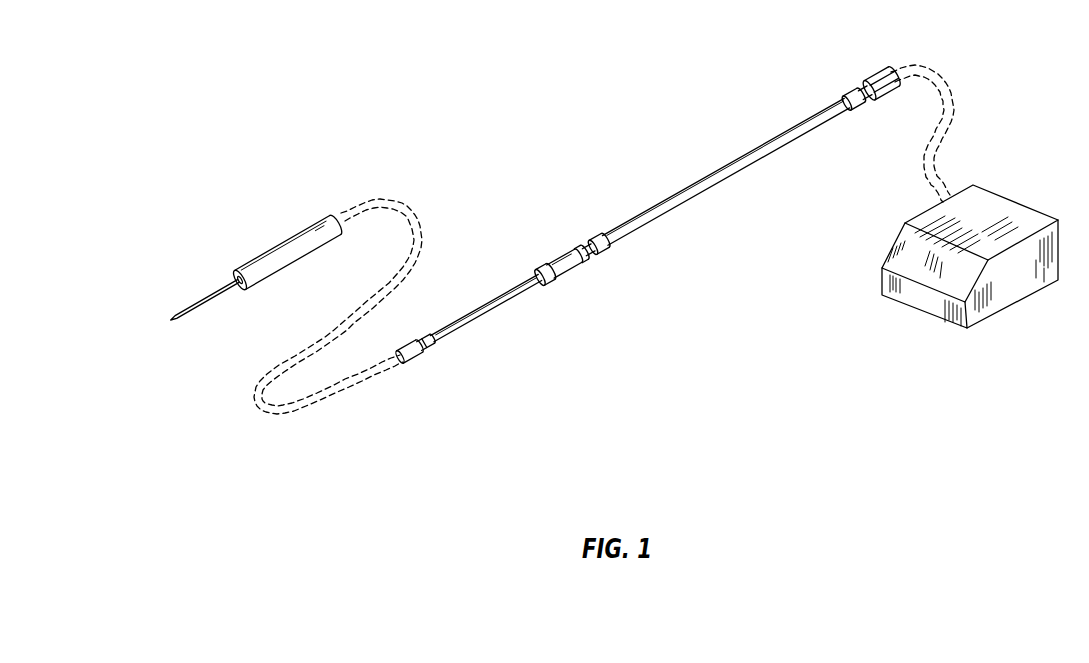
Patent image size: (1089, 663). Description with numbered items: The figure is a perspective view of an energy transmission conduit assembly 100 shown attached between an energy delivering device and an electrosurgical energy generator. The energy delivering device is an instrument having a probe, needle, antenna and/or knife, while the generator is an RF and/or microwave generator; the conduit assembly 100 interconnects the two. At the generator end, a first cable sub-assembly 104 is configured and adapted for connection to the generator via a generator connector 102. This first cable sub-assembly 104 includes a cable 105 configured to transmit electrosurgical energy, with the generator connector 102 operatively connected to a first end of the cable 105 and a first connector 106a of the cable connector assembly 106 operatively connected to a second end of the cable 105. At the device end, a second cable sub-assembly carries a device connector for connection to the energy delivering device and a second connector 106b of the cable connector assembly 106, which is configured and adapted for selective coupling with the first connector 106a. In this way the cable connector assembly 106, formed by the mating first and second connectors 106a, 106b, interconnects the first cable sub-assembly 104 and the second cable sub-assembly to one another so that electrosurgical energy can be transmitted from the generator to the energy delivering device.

The energy transmission conduit assembly 100 is at (650, 222).
The generator connector 102 is at (855, 80).
The first cable sub-assembly 104 is at (723, 168).
The cable 105 is at (732, 172).
The cable connector assembly 106 is at (595, 256).
The first connector 106a is at (606, 257).
The second connector 106b is at (549, 288).
The energy delivering device D is at (255, 242).
The electrosurgical energy generator G is at (925, 216).